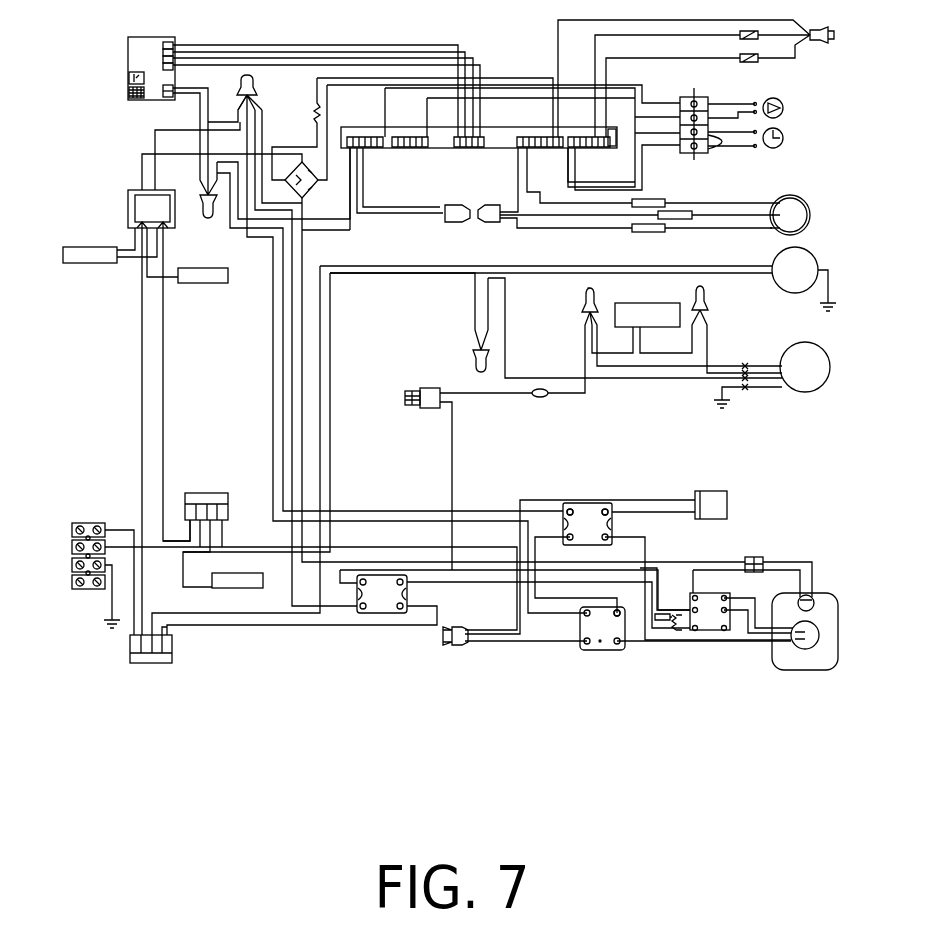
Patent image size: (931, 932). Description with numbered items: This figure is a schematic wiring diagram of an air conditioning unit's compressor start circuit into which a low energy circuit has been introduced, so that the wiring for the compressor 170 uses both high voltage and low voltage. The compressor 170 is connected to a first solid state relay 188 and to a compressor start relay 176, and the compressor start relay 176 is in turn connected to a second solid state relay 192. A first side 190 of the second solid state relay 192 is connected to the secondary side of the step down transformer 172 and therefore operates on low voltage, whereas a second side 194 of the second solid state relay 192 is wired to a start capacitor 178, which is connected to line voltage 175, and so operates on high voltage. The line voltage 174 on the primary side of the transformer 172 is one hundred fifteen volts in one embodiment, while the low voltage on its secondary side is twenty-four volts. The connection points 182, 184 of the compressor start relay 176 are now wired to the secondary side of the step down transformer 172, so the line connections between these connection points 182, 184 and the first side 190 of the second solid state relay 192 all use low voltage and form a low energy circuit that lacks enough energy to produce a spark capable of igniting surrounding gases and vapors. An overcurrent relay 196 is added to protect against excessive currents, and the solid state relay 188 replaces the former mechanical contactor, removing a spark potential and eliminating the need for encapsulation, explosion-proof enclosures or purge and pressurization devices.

The compressor 170 is at (785, 657).
The step down transformer 172 is at (145, 203).
The line voltage 174 is at (148, 656).
The line voltage 175 is at (200, 492).
The compressor start relay 176 is at (600, 642).
The start capacitor 178 is at (717, 499).
The connection point 182 is at (580, 626).
The connection point 184 is at (620, 623).
The first solid state relay 188 is at (380, 603).
The first side of the second solid state relay 190 is at (566, 512).
The second solid state relay 192 is at (591, 520).
The second side of the second solid state relay 194 is at (604, 513).
The overcurrent relay 196 is at (710, 622).